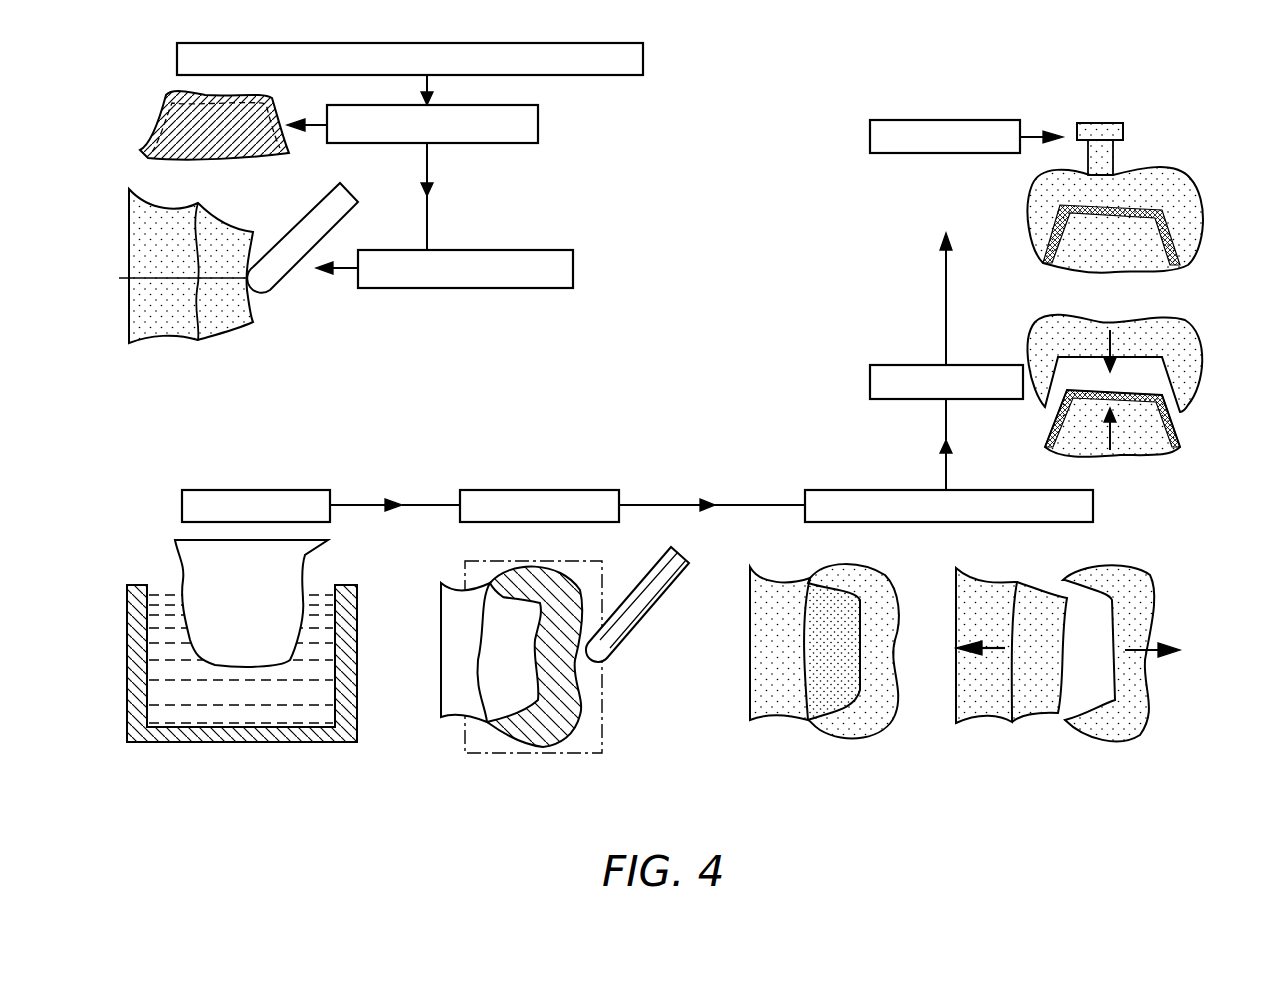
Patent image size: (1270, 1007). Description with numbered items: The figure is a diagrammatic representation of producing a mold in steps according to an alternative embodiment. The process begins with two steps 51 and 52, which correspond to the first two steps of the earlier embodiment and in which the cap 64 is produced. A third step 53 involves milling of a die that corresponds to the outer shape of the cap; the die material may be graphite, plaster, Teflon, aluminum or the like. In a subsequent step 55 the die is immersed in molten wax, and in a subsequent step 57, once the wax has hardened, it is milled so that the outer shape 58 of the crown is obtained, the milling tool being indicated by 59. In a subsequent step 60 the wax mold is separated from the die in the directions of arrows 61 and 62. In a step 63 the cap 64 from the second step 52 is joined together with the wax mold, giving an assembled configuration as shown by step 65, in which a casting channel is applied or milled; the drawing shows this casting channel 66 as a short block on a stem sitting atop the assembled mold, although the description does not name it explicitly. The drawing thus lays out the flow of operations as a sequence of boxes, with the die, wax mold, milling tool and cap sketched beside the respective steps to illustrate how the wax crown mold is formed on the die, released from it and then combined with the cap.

The first step 51 is at (640, 57).
The second step 52 is at (540, 118).
The third step 53 is at (528, 258).
The immersion step 55 is at (208, 497).
The milling step 57 is at (543, 494).
The outer shape of the crown 58 is at (578, 580).
The milling tool 59 is at (640, 628).
The separation step 60 is at (975, 507).
The arrow 61 is at (1165, 640).
The arrow 62 is at (965, 660).
The joining step 63 is at (975, 380).
The cap 64 is at (1175, 435).
The assembly step 65 is at (975, 143).
The handle 66 is at (1110, 120).